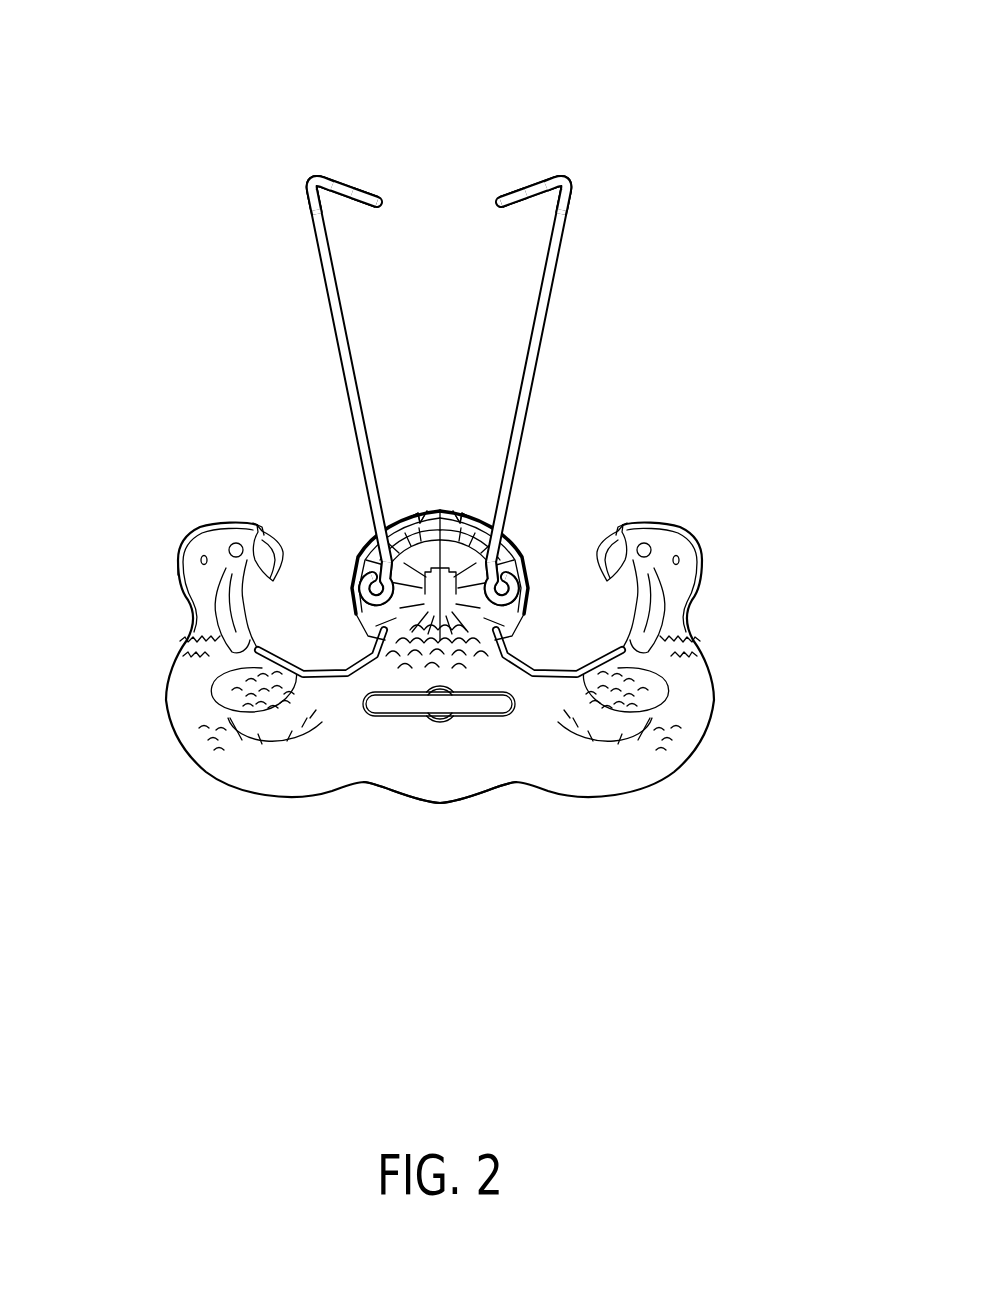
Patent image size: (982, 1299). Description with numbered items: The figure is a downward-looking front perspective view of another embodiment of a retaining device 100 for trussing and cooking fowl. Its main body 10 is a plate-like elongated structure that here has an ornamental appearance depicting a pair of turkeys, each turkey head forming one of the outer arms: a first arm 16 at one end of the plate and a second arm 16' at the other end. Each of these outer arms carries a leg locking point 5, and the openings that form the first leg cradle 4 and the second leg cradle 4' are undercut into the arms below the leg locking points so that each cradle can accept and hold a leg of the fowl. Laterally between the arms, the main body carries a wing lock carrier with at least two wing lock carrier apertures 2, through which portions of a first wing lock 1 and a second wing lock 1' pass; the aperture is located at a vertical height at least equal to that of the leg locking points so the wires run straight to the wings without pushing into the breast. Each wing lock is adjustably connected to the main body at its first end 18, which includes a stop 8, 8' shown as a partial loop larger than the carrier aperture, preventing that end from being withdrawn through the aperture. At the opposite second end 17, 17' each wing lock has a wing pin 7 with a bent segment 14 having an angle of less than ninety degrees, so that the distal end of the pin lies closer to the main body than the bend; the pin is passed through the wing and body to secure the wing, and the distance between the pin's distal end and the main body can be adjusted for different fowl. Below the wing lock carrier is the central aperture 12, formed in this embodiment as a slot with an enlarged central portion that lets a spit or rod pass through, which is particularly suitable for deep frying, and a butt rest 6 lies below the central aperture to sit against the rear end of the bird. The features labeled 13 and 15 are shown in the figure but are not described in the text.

The retaining device 100 is at (170, 492).
The first wing lock 1 is at (255, 390).
The second wing lock 1' is at (629, 390).
The wing lock carrier aperture 2 is at (386, 541).
The first leg cradle 4 is at (217, 677).
The second leg cradle 4' is at (667, 681).
The leg locking point 5 is at (273, 586).
The butt rest 6 is at (440, 815).
The wing pin 7 is at (380, 210).
The stop 8 is at (320, 726).
The stop 8' is at (563, 726).
The main body 10 is at (203, 781).
The central aperture 12 is at (442, 705).
The slot 13 is at (398, 705).
The bent segment 14 is at (321, 171).
The top tab 15 is at (440, 508).
The first arm 16 is at (148, 598).
The second arm 16' is at (734, 598).
The second end of wing lock 17 is at (223, 134).
The second end of wing lock 17' is at (657, 134).
The first end of wing lock 18 is at (476, 585).